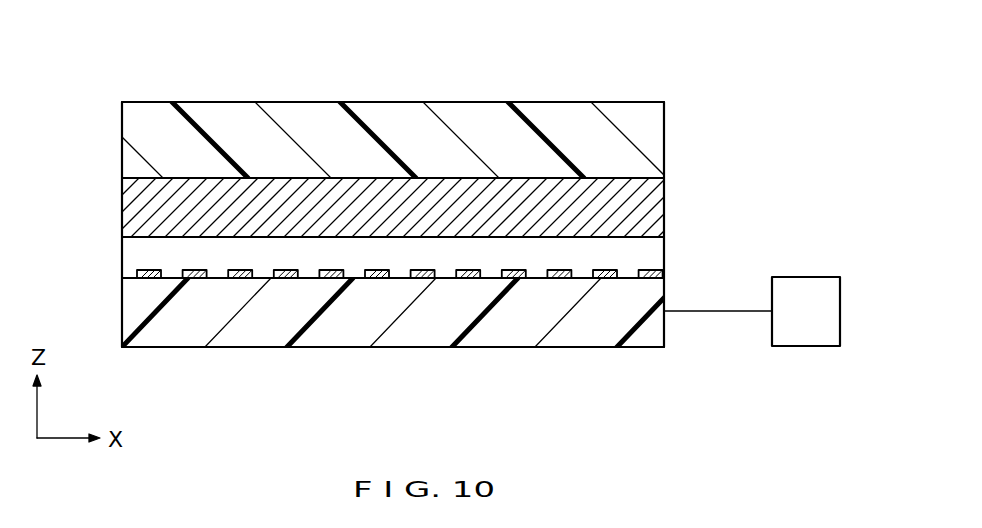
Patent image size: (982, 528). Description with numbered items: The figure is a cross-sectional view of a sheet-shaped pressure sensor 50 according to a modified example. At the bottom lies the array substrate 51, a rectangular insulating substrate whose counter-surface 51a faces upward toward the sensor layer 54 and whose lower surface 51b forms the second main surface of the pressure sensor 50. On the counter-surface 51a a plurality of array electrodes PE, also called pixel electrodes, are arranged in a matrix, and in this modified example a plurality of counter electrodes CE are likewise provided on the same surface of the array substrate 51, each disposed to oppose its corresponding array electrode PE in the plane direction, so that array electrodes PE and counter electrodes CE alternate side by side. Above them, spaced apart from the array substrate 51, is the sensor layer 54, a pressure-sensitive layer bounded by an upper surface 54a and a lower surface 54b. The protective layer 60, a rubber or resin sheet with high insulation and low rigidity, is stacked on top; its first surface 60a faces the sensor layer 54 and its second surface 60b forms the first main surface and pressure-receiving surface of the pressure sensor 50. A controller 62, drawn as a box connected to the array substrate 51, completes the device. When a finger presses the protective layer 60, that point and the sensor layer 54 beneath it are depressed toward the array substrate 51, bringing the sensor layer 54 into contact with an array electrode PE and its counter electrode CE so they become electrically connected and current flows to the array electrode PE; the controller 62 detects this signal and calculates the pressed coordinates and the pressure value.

The pressure sensor 50 is at (649, 86).
The protective layer 60 is at (657, 130).
The first surface 60a is at (205, 181).
The second surface 60b is at (557, 102).
The sensor layer 54 is at (657, 206).
The upper surface of sensor layer 54a is at (623, 178).
The lower surface of sensor layer 54b is at (623, 237).
The array substrate 51 is at (658, 327).
The counter-surface 51a is at (224, 272).
The lower surface 51b is at (543, 348).
The array electrode PE is at (145, 278).
The counter electrode CE is at (195, 278).
The controller 62 is at (805, 347).